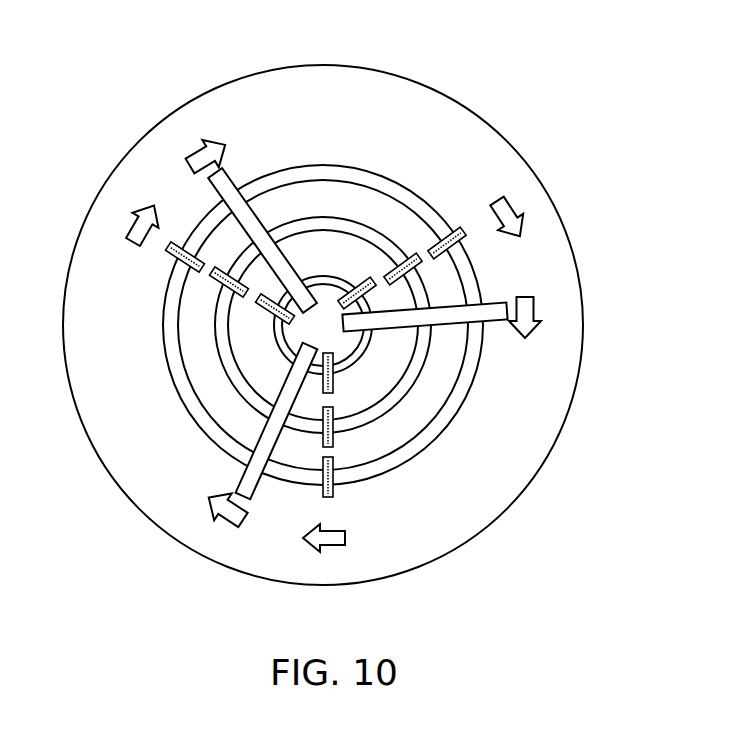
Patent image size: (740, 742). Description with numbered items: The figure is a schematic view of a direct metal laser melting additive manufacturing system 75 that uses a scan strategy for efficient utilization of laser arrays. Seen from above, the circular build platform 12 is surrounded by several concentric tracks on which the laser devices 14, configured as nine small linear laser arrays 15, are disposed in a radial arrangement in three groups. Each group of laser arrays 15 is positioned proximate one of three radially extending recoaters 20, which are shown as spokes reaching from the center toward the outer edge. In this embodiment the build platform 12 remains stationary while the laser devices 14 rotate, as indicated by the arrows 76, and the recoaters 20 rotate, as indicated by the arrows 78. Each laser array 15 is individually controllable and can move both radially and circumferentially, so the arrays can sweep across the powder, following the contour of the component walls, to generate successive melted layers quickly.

The build platform 12 is at (118, 165).
The laser device 14 is at (281, 349).
The laser array 15 is at (172, 252).
The recoater 20 is at (240, 182).
The DMLM system 75 is at (531, 63).
The arrow 76 is at (128, 217).
The arrow 78 is at (197, 148).